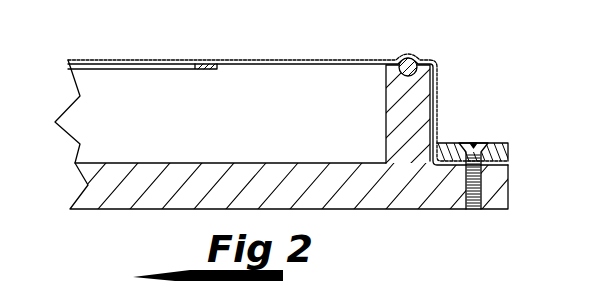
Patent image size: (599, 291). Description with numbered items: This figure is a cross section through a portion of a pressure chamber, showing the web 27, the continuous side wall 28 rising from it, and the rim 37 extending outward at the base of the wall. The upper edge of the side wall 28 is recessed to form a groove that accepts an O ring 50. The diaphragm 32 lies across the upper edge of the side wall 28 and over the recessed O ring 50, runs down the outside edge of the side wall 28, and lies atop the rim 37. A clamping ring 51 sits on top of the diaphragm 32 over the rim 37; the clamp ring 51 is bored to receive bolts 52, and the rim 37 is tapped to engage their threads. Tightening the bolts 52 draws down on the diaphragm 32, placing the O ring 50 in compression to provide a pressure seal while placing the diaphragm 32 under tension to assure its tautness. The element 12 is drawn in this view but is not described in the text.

The intermediate layer 12 is at (203, 71).
The cavity 27 is at (226, 162).
The upright frame member 28 is at (385, 131).
The cover sheet 32 is at (287, 59).
The base member 37 is at (512, 182).
The rivet head 50 is at (401, 77).
The clamp bar 51 is at (512, 150).
The screw 52 is at (468, 142).